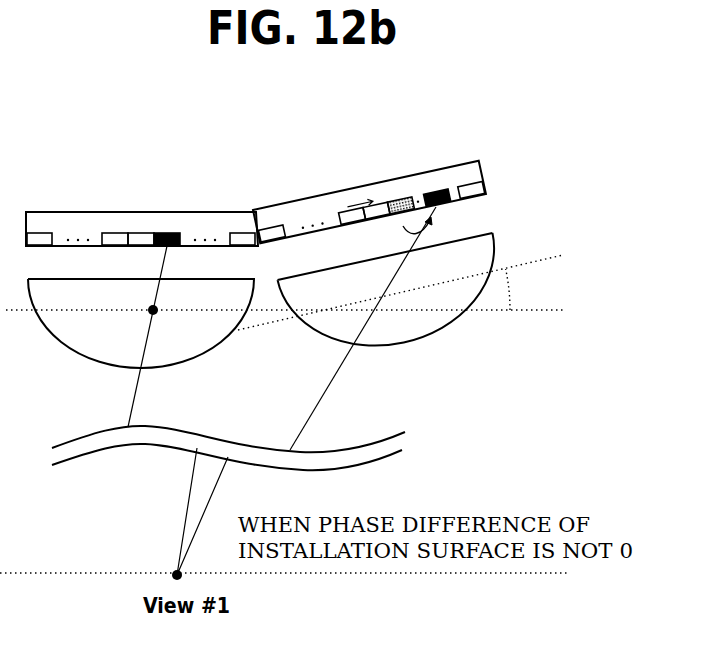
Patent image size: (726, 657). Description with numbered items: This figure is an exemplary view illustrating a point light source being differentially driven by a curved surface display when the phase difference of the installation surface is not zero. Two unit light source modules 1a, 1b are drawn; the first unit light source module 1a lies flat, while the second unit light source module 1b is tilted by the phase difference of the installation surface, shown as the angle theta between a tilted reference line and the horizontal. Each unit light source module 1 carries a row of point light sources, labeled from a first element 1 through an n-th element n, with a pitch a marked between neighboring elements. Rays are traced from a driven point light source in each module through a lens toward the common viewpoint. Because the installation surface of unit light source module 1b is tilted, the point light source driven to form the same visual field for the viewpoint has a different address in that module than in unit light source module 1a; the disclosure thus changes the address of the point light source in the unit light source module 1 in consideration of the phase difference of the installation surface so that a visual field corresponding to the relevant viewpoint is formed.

The unit light source module 1a is at (192, 212).
The unit light source module 1b is at (440, 170).
The unit light source module 1 is at (39, 231).
The n-th antenna element n is at (242, 232).
The antenna element spacing a is at (115, 228).